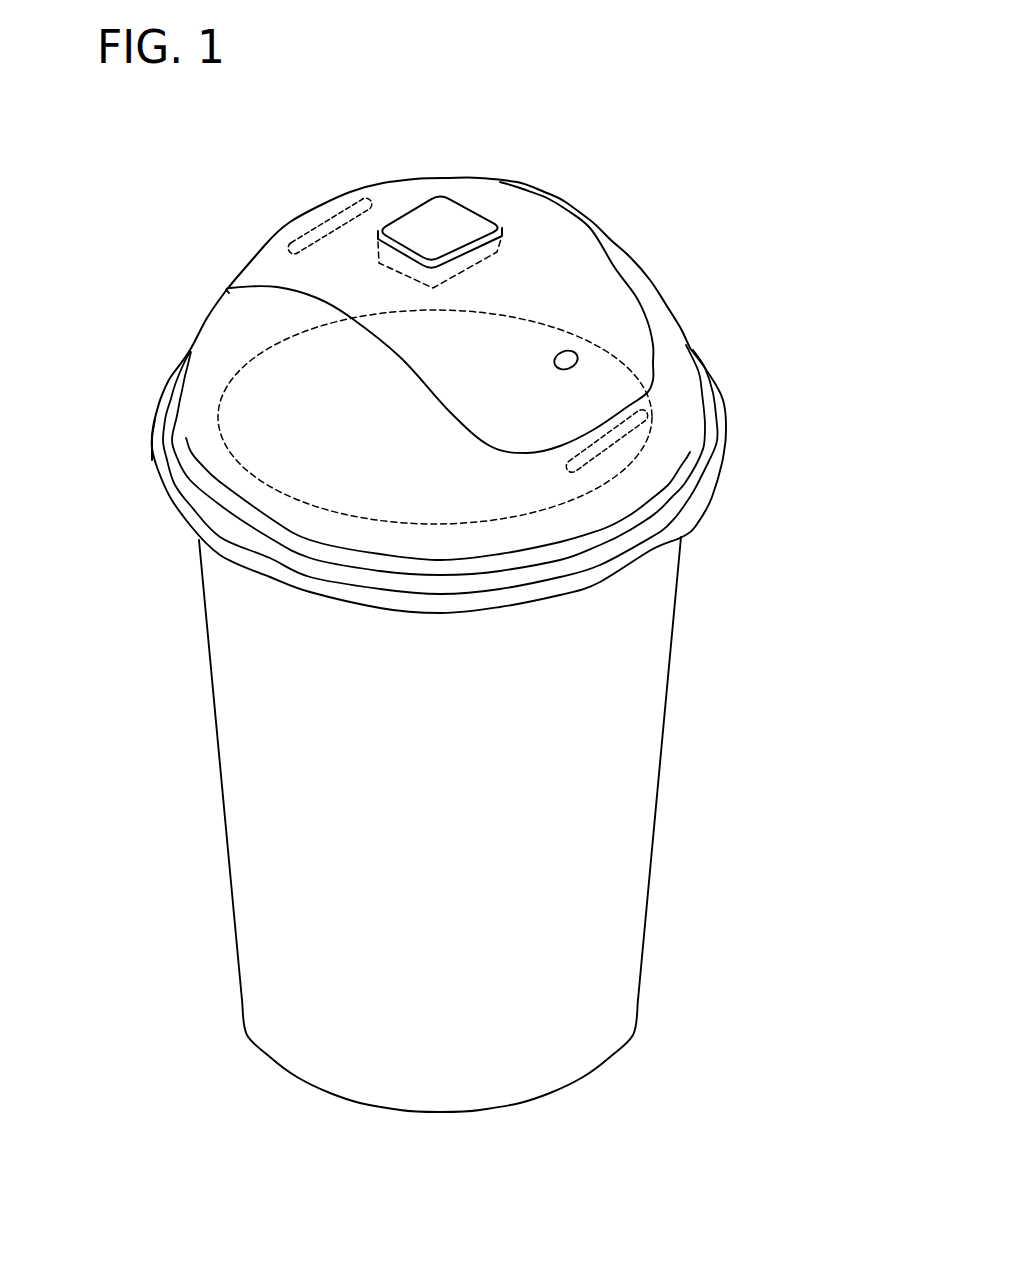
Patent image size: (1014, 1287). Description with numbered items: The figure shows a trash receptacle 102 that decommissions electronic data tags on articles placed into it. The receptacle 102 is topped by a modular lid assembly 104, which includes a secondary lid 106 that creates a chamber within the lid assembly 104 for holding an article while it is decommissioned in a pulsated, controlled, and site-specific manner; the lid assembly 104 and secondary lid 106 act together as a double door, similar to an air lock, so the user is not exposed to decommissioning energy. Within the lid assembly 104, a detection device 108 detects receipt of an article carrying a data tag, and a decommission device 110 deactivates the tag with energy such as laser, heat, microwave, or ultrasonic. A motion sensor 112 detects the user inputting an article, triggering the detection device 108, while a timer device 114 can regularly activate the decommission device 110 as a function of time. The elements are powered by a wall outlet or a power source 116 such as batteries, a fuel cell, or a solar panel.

The trash receptacle 102 is at (212, 694).
The modular lid assembly 104 is at (155, 418).
The secondary lid 106 is at (563, 330).
The detection device 108 is at (315, 210).
The decommission device 110 is at (505, 255).
The motion sensor 112 is at (578, 362).
The timer device 114 is at (643, 437).
The power source 116 is at (445, 195).